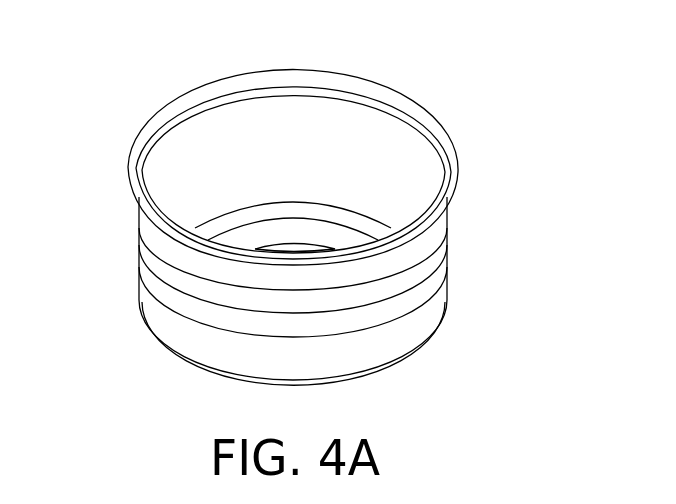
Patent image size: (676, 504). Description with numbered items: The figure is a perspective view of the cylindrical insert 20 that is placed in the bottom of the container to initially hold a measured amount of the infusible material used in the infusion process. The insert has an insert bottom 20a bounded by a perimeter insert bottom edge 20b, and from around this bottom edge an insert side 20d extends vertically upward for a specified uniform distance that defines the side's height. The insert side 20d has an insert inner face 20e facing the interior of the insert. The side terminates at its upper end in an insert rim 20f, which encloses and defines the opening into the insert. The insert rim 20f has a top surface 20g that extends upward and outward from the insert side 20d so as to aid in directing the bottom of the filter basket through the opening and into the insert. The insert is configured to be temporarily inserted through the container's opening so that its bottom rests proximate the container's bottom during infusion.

The cylindrical insert 20 is at (425, 70).
The insert bottom 20a is at (194, 361).
The perimeter insert bottom edge 20b is at (139, 305).
The insert side 20d is at (160, 257).
The insert inner face 20e is at (176, 153).
The insert rim 20f is at (452, 168).
The top surface 20g is at (437, 122).